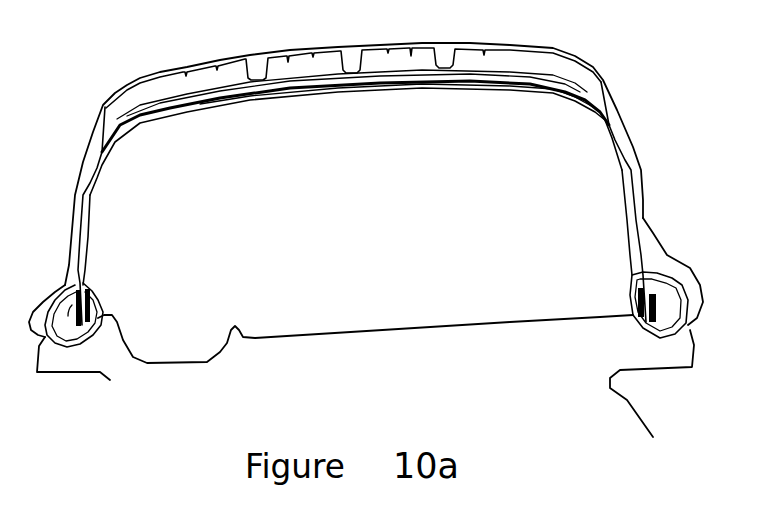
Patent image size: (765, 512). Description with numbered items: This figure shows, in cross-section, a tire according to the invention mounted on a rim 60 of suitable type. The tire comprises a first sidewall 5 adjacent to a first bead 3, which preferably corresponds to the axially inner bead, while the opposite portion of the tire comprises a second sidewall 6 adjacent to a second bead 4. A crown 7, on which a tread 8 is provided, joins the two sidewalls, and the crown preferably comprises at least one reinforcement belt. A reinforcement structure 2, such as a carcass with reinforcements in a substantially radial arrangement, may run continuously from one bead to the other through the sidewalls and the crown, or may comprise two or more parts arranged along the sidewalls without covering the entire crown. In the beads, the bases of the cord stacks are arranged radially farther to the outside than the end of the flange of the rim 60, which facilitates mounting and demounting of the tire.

The reinforcement structure 2 is at (643, 218).
The first bead 3 is at (86, 291).
The second bead 4 is at (667, 303).
The first sidewall 5 is at (90, 203).
The second sidewall 6 is at (642, 166).
The crown 7 is at (363, 91).
The tread 8 is at (444, 46).
The rim 60 is at (442, 363).